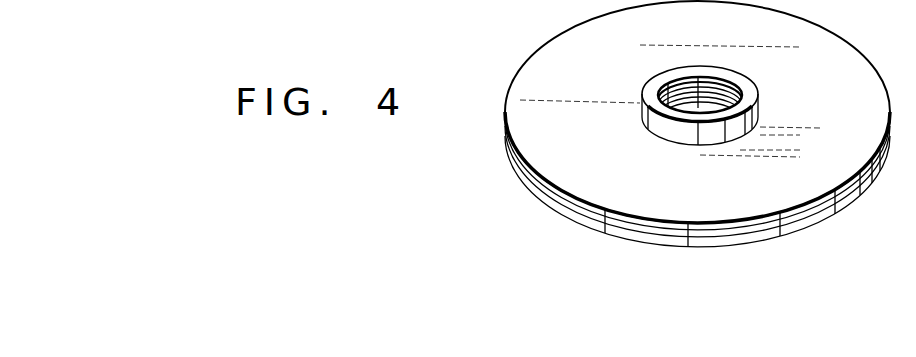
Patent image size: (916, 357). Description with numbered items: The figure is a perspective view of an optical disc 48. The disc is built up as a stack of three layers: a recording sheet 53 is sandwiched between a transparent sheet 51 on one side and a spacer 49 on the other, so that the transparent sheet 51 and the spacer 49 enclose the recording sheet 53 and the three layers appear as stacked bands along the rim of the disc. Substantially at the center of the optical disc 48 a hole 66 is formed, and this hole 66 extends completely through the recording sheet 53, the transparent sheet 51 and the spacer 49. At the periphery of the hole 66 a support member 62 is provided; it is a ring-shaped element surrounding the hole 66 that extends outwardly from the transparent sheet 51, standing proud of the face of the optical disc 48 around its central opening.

The optical disc 48 is at (851, 50).
The spacer 49 is at (710, 233).
The transparent sheet 51 is at (736, 222).
The recording sheet 53 is at (752, 237).
The support member 62 is at (758, 93).
The hole 66 is at (648, 121).